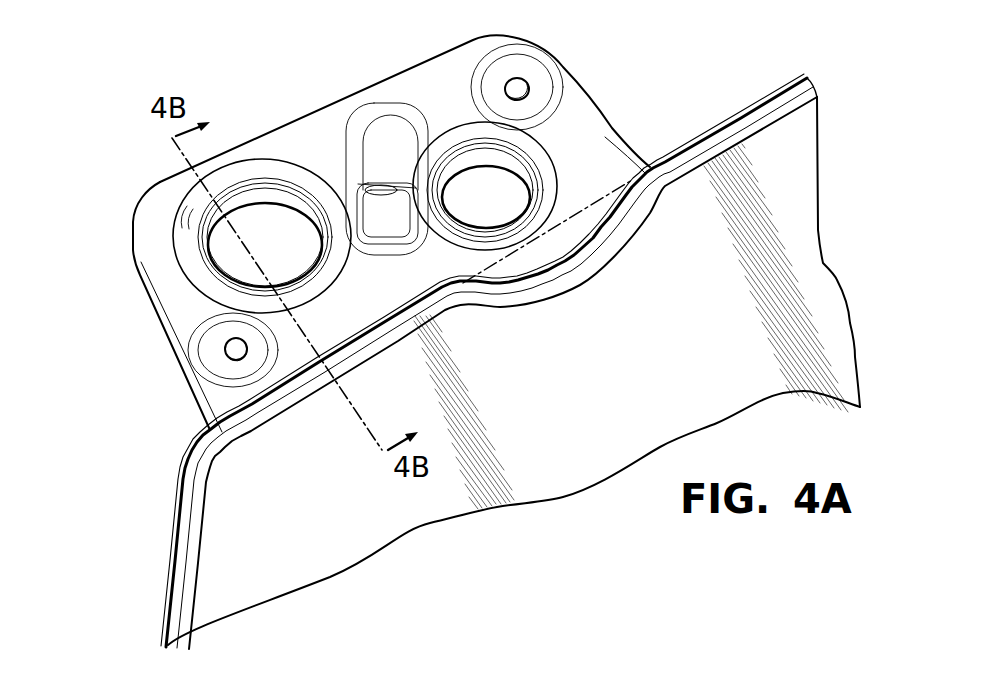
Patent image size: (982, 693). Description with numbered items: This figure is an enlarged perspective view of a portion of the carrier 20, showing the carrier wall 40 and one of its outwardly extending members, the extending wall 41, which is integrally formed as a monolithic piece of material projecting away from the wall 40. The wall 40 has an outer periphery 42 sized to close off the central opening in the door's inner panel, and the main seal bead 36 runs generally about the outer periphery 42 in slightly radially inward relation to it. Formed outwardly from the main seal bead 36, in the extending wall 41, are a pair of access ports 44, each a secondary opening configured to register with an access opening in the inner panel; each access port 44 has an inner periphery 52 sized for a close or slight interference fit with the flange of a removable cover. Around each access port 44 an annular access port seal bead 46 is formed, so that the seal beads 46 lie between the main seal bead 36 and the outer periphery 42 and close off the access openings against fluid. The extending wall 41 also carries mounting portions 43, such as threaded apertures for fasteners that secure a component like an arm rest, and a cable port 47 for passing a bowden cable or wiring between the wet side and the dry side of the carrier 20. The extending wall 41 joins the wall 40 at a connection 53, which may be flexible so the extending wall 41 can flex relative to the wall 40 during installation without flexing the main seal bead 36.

The carrier 20 is at (721, 77).
The main seal bead 36 is at (173, 550).
The carrier wall 40 is at (263, 507).
The extending wall 41 is at (160, 183).
The outer periphery 42 is at (163, 615).
The mounting portions 43 is at (519, 89).
The access port 44 is at (236, 252).
The access port seal bead 46 is at (190, 213).
The cable port 47 is at (392, 190).
The inner periphery 52 is at (258, 200).
The flexible connection 53 is at (473, 276).